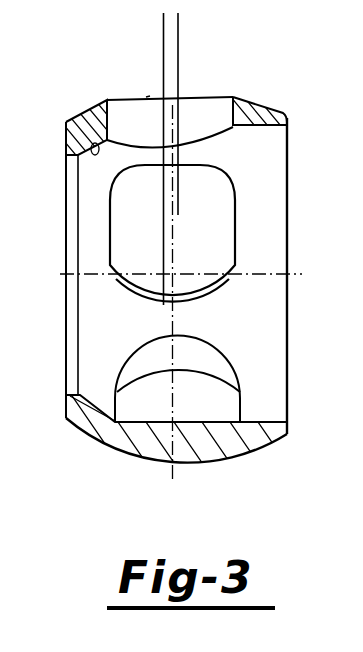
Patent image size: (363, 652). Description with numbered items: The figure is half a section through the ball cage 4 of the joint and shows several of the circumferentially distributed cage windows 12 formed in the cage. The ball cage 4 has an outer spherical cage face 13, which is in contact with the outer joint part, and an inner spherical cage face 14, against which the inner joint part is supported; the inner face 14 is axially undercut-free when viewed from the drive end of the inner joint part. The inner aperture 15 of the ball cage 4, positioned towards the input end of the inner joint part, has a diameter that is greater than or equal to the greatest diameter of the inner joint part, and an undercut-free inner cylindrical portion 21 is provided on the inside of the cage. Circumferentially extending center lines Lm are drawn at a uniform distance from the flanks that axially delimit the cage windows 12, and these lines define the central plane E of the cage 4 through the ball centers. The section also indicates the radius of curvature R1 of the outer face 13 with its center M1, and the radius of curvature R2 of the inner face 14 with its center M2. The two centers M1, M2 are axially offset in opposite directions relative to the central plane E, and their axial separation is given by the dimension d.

The ball cage 4 is at (273, 117).
The cage windows 12 is at (235, 102).
The outer spherical cage face 13 is at (72, 121).
The inner spherical cage face 14 is at (95, 143).
The inner aperture 15 is at (288, 322).
The undercut-free inner cylindrical portion 21 is at (272, 422).
The axial distance dimension d is at (220, 21).
The longitudinal center lines of the cage windows Lm is at (168, 125).
The radius of curvature of the outer face R1 is at (257, 108).
The radius of curvature of the inner face R2 is at (173, 274).
The center of the radius of curvature R1 M1 is at (200, 270).
The center of the radius of curvature R2 M2 is at (162, 270).
The central plane E is at (176, 366).